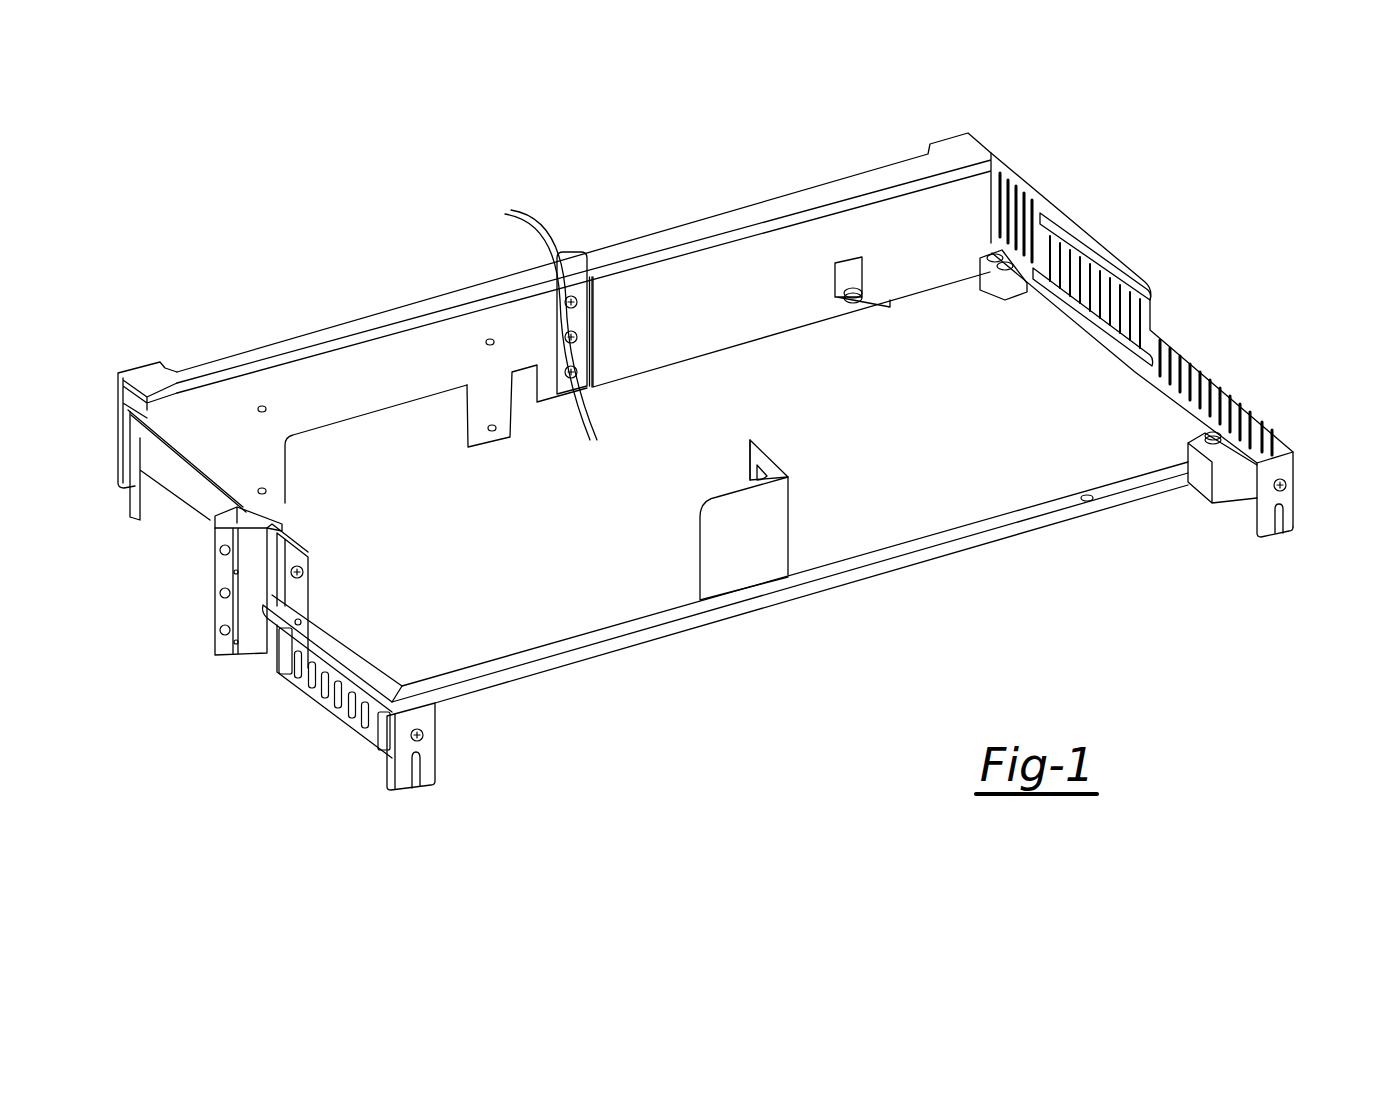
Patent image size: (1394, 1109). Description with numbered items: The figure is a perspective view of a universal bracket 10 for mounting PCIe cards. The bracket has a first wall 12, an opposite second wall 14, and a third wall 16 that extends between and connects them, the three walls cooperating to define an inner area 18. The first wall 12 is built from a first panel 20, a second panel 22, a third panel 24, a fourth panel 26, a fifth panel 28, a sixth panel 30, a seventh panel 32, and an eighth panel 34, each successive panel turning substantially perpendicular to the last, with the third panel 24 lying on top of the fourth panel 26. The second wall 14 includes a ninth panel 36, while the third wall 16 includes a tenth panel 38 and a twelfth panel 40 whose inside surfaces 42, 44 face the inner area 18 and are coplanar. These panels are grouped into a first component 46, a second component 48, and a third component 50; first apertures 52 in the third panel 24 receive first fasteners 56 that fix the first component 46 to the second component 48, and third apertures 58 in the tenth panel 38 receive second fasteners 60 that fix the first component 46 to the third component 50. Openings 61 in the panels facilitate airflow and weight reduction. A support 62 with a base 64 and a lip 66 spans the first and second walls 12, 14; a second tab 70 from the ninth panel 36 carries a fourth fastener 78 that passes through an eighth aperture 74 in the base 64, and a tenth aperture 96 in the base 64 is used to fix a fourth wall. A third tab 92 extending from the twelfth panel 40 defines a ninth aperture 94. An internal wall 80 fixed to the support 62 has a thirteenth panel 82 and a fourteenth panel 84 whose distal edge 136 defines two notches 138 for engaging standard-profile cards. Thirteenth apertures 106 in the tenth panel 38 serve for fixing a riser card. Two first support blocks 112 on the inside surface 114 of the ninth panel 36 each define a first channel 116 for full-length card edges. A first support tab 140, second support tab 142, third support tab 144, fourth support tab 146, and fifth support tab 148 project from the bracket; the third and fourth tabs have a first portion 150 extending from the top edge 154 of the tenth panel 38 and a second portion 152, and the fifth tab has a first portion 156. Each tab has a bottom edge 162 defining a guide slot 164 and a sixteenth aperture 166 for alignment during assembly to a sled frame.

The universal bracket 10 is at (1165, 180).
The first wall 12 is at (158, 445).
The second wall 14 is at (1125, 262).
The third wall 16 is at (412, 295).
The inner area 18 is at (668, 428).
The first panel 20 is at (150, 486).
The second panel 22 is at (252, 518).
The third panel 24 is at (220, 573).
The fourth panel 26 is at (226, 500).
The fifth panel 28 is at (250, 648).
The sixth panel 30 is at (292, 554).
The seventh panel 32 is at (300, 608).
The eighth panel 34 is at (375, 757).
The ninth panel 36 is at (1237, 392).
The tenth panel 38 is at (283, 352).
The twelfth panel 40 is at (812, 235).
The inside surface 42 is at (455, 369).
The inside surface 44 is at (742, 305).
The first component 46 is at (110, 370).
The second component 48 is at (396, 798).
The third component 50 is at (1002, 150).
The first apertures 52 is at (221, 548).
The first fasteners 56 is at (234, 573).
The third apertures 58 is at (540, 318).
The second fasteners 60 is at (593, 369).
The openings 61 is at (1075, 290).
The support 62 is at (868, 580).
The base 64 is at (900, 540).
The lip 66 is at (950, 560).
The second tab 70 is at (1248, 482).
The eighth aperture 74 is at (1188, 445).
The fourth fastener 78 is at (1225, 440).
The internal wall 80 is at (770, 516).
The thirteenth panel 82 is at (740, 567).
The fourteenth panel 84 is at (772, 462).
The third tab 92 is at (872, 302).
The ninth aperture 94 is at (855, 307).
The tenth aperture 96 is at (1089, 502).
The thirteenth apertures 106 is at (490, 338).
The first support blocks 112 is at (1120, 300).
The inside surface 114 is at (1030, 205).
The first channel 116 is at (1150, 320).
The distal edge 136 is at (745, 477).
The notches 138 is at (748, 448).
The first support tab 140 is at (440, 762).
The second support tab 142 is at (1290, 517).
The third support tab 144 is at (135, 397).
The fourth support tab 146 is at (563, 248).
The fifth support tab 148 is at (925, 155).
The first portion 150 is at (142, 372).
The second portion 152 is at (112, 427).
The top edge 154 is at (340, 337).
The first portion 156 is at (944, 125).
The bottom edge 162 is at (1288, 537).
The guide slot 164 is at (1279, 538).
The sixteenth apertures 166 is at (1290, 485).